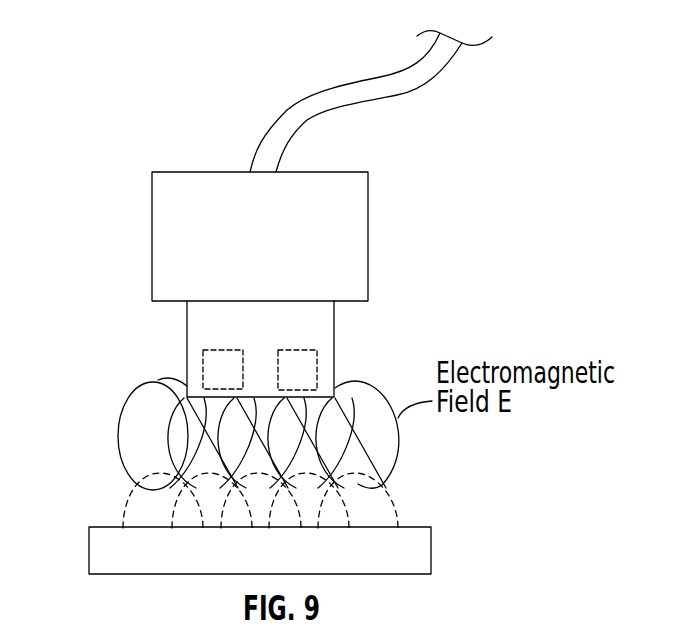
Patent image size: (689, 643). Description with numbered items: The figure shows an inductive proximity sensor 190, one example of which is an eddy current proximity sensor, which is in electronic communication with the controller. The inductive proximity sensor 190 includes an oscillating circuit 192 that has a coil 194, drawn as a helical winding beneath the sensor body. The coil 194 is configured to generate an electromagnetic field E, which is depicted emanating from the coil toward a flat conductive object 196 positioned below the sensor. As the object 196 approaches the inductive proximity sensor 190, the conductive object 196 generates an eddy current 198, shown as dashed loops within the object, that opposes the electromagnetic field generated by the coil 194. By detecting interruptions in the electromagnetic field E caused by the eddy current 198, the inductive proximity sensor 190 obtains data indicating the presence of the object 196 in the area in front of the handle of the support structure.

The inductive proximity sensor 190 is at (156, 68).
The oscillating circuit 192 is at (186, 352).
The coil 194 is at (320, 370).
The object 196 is at (94, 555).
The eddy current 198 is at (398, 505).